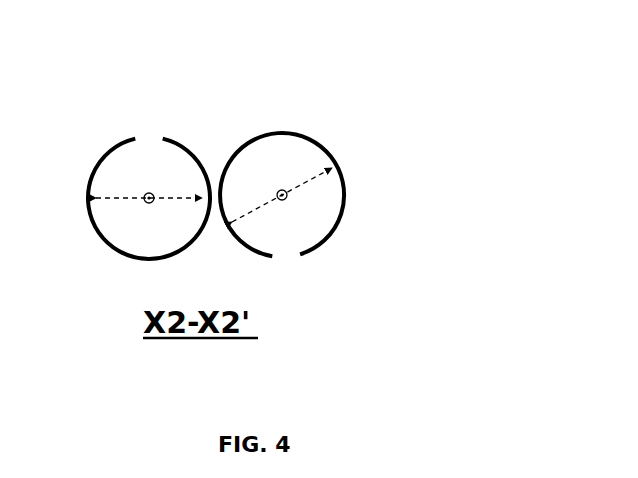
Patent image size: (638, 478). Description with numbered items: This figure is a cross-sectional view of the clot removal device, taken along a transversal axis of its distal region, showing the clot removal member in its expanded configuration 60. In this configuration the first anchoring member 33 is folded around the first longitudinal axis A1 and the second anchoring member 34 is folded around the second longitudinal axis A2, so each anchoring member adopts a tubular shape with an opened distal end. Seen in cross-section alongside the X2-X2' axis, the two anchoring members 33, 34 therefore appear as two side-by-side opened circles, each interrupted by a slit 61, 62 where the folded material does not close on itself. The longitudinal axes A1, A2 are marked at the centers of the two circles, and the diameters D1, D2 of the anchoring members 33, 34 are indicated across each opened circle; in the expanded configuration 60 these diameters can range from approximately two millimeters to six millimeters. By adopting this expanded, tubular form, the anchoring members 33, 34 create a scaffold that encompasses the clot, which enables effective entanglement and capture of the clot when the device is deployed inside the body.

The expanded configuration 60 is at (248, 204).
The first anchoring member 33 is at (127, 263).
The second anchoring member 34 is at (341, 193).
The slit 61 is at (285, 258).
The slit 62 is at (149, 135).
The diameter of anchoring member D1 is at (307, 185).
The diameter of anchoring member D2 is at (113, 190).
The first longitudinal axis A1 is at (260, 208).
The second longitudinal axis A2 is at (138, 203).